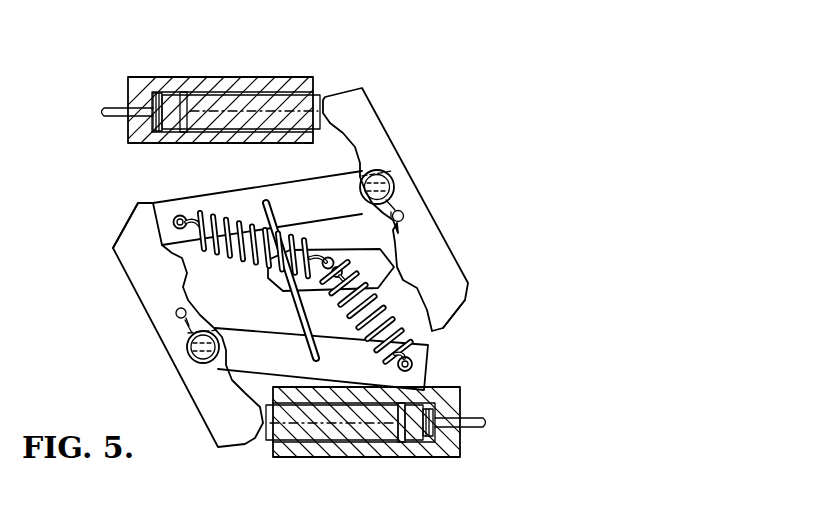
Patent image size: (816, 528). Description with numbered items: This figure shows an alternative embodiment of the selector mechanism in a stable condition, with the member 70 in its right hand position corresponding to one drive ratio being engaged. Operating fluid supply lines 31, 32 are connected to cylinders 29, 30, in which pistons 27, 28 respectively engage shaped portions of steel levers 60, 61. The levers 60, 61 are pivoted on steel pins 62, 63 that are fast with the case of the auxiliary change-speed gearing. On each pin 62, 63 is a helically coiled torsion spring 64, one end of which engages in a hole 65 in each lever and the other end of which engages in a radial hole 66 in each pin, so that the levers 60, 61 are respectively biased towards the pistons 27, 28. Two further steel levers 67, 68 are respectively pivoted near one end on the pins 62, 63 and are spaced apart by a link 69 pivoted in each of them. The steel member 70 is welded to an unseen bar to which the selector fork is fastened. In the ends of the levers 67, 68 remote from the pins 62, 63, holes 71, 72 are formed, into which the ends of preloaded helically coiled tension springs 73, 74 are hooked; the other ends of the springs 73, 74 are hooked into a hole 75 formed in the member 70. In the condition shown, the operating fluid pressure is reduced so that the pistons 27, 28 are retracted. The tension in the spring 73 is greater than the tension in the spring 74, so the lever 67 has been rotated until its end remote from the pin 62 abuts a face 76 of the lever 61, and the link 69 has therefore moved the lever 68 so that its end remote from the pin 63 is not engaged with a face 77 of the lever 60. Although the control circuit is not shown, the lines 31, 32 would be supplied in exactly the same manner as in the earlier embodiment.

The piston 27 is at (257, 100).
The piston 28 is at (317, 427).
The cylinder 29 is at (190, 80).
The cylinder 30 is at (394, 452).
The operating fluid supply line 31 is at (108, 107).
The operating fluid supply line 32 is at (470, 424).
The lever 60 is at (362, 112).
The lever 61 is at (217, 423).
The pin 62 is at (362, 175).
The pin 63 is at (188, 355).
The torsion spring 64 is at (393, 193).
The hole 65 is at (405, 218).
The radial hole 66 is at (395, 180).
The lever 67 is at (300, 192).
The lever 68 is at (243, 333).
The link 69 is at (300, 308).
The member 70 is at (388, 268).
The hole 71 is at (180, 215).
The hole 72 is at (413, 367).
The tension spring 73 is at (205, 210).
The tension spring 74 is at (410, 333).
The hole 75 is at (338, 259).
The face 76 is at (150, 213).
The face 77 is at (457, 310).